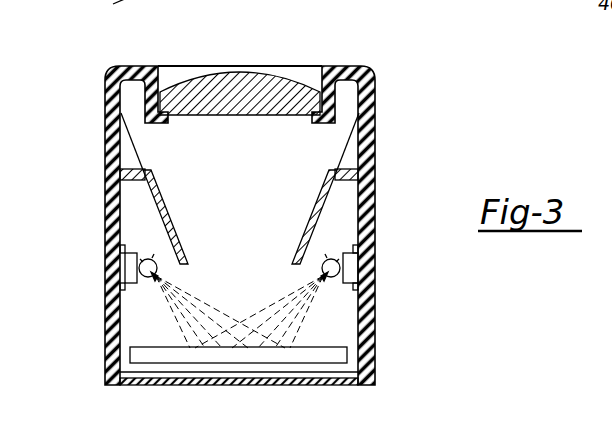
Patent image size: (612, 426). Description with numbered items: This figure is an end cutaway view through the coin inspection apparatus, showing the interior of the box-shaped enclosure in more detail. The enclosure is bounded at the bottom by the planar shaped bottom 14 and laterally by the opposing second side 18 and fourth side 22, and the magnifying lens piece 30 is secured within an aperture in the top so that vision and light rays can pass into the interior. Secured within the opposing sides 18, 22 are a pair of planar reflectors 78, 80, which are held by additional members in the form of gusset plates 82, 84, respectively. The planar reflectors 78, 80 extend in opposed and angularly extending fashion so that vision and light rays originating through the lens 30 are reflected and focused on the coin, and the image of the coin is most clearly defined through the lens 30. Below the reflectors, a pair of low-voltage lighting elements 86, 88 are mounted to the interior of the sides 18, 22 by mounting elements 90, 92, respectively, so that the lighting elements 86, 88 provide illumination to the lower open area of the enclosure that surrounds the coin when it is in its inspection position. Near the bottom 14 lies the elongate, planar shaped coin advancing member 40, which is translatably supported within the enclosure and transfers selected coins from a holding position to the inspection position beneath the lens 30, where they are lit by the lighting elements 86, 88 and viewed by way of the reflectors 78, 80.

The bottom 14 is at (108, 6).
The second side 18 is at (105, 200).
The fourth side 22 is at (375, 198).
The magnifying lens piece 30 is at (240, 77).
The coin advancing member 40 is at (342, 356).
The planar reflector 78 is at (168, 222).
The planar reflector 80 is at (310, 220).
The gusset plate 82 is at (128, 144).
The gusset plate 84 is at (351, 148).
The low-voltage lighting element 86 is at (152, 284).
The low-voltage lighting element 88 is at (328, 284).
The mounting element 90 is at (118, 292).
The mounting element 92 is at (373, 274).